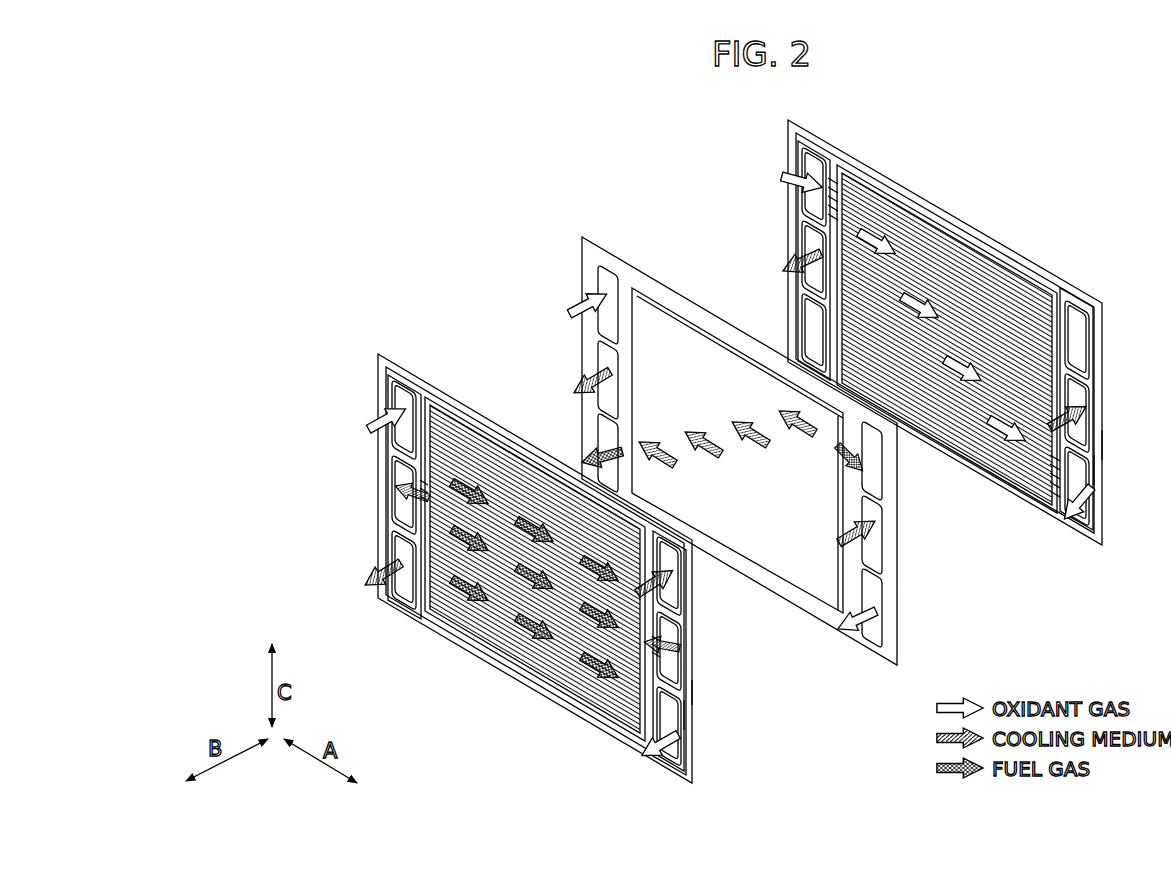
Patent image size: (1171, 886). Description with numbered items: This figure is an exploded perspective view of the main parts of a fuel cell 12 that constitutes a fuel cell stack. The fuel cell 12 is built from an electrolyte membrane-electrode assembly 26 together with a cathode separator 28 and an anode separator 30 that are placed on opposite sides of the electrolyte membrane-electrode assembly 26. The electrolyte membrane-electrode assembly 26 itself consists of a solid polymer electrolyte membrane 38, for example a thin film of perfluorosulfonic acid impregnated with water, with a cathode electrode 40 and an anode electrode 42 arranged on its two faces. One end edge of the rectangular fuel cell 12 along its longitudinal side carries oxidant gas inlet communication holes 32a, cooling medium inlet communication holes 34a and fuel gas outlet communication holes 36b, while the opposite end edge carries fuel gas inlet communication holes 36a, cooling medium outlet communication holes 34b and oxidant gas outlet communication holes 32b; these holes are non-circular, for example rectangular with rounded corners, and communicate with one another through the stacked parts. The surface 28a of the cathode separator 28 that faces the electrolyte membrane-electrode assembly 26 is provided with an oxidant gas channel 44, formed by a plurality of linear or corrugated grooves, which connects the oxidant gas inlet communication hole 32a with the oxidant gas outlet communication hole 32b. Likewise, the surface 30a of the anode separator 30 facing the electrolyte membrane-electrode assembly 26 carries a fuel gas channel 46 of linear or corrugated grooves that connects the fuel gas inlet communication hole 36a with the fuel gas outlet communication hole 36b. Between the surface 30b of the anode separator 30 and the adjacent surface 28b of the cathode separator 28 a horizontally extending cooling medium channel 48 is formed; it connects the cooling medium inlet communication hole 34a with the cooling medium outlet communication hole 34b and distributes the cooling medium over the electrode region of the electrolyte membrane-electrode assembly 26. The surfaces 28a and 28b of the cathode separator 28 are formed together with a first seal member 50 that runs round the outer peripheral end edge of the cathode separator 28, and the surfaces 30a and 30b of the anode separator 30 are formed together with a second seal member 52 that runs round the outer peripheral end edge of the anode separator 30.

The fuel cell 12 is at (846, 98).
The electrolyte membrane-electrode assembly 26 is at (580, 235).
The cathode separator 28 is at (786, 118).
The electrolyte membrane-electrode assembly-facing surface of the cathode separator 28a is at (1100, 445).
The surface of the cathode separator 28b is at (1100, 470).
The anode separator 30 is at (376, 352).
The electrolyte membrane-electrode assembly-facing surface of the anode separator 30a is at (690, 715).
The surface of the anode separator 30b is at (690, 690).
The oxidant gas inlet communication hole 32a is at (400, 398).
The oxidant gas outlet communication hole 32b is at (680, 745).
The cooling medium inlet communication hole 34a is at (400, 465).
The cooling medium outlet communication hole 34b is at (672, 665).
The fuel gas inlet communication hole 36a is at (672, 585).
The fuel gas outlet communication hole 36b is at (400, 550).
The solid polymer electrolyte membrane 38 is at (700, 318).
The cathode electrode 40 is at (735, 360).
The anode electrode 42 is at (660, 325).
The oxidant gas channel 44 is at (903, 235).
The fuel gas channel 46 is at (470, 450).
The cooling medium channel 48 is at (495, 470).
The first seal member 50 is at (983, 240).
The second seal member 52 is at (470, 650).